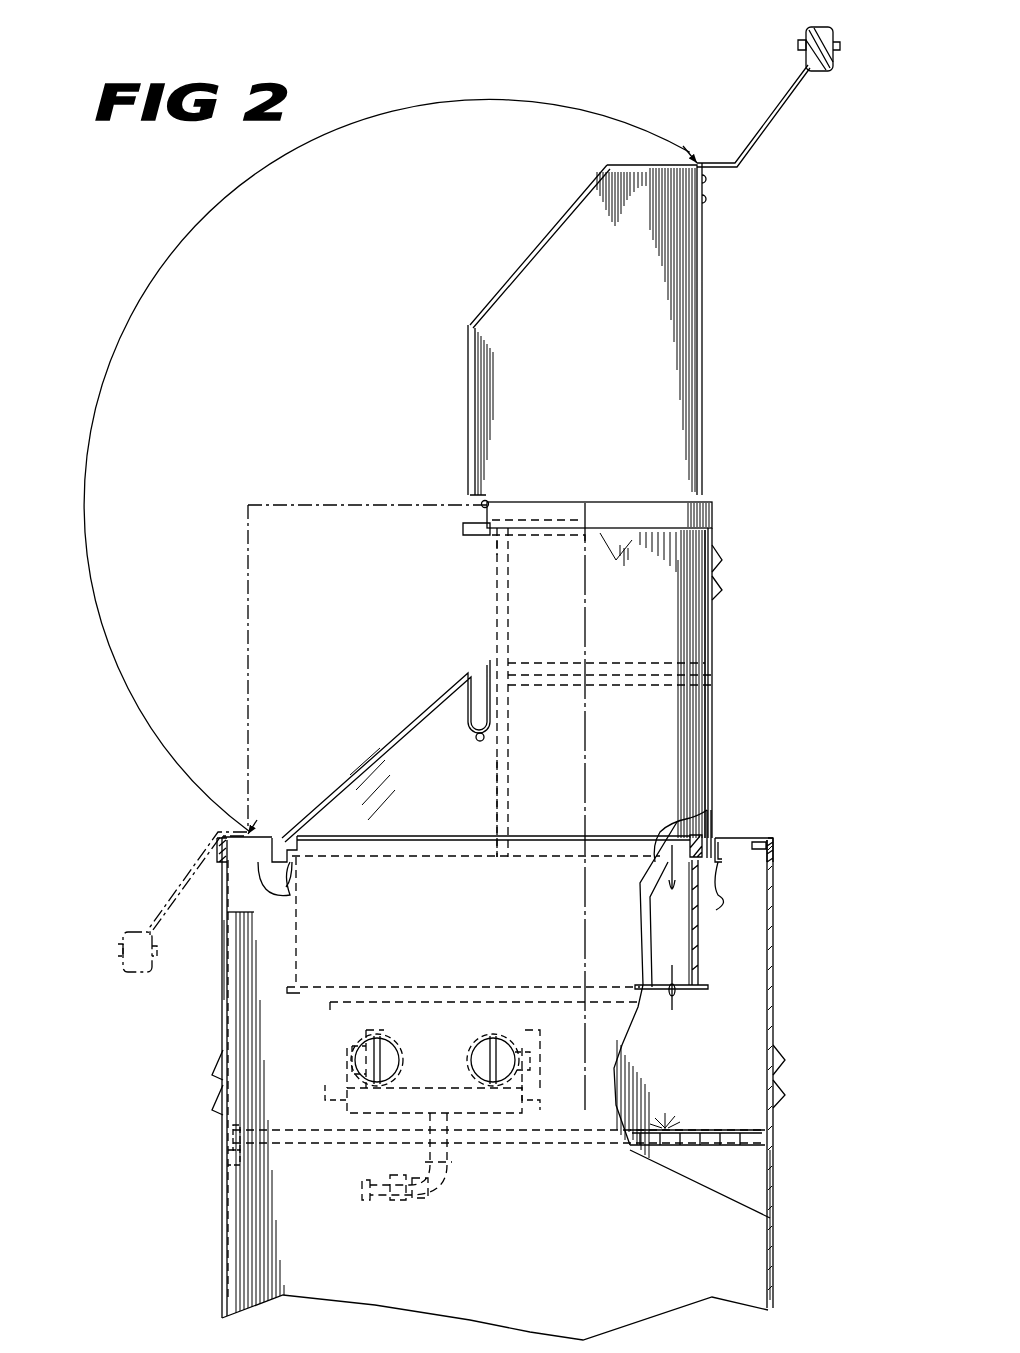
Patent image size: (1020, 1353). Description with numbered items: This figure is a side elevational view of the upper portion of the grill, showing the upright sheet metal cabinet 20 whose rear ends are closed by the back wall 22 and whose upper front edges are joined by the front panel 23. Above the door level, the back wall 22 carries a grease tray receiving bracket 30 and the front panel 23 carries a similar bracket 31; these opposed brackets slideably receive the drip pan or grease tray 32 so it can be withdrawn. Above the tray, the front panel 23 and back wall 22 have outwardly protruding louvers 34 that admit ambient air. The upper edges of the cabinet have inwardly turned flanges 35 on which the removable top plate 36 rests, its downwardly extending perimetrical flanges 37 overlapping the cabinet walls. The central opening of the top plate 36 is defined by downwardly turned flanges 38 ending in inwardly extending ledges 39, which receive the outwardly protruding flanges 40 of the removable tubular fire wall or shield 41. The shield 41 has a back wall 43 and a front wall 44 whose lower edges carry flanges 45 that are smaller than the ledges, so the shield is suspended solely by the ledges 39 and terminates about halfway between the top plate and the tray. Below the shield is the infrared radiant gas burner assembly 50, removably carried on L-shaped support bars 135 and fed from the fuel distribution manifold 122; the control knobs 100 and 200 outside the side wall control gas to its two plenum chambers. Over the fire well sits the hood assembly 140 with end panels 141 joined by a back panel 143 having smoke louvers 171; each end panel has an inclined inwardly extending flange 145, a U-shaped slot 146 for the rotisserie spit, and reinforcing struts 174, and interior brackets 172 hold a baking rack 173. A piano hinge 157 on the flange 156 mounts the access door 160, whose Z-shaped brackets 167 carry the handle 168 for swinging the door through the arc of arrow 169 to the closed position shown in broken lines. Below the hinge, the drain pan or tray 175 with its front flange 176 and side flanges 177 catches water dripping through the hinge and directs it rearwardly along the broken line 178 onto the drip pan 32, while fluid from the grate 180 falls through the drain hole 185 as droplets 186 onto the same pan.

The cabinet 20 is at (221, 1220).
The back wall 22 is at (774, 1192).
The front panel 23 is at (222, 964).
The grease tray receiving bracket 30 is at (762, 1165).
The bracket 31 is at (224, 1166).
The drip pan or grease tray 32 is at (672, 1146).
The louvers 34 is at (215, 1065).
The inwardly turned flanges 35 is at (222, 870).
The top plate 36 is at (758, 838).
The perimetrical flanges 37 is at (774, 858).
The downwardly turned flanges 38 is at (280, 885).
The ledges 39 is at (690, 870).
The outwardly protruding flanges 40 is at (290, 850).
The fire wall or shield 41 is at (700, 968).
The back wall 43 is at (699, 940).
The front wall 44 is at (294, 945).
The flanges 45 is at (292, 1000).
The infrared radiant gas burner assembly 50 is at (455, 1026).
The control knob 100 is at (355, 1058).
The fuel distribution manifold 122 is at (386, 1130).
The burner assembly support bars 135 is at (323, 1102).
The hood assembly 140 is at (713, 632).
The end panels 141 is at (694, 752).
The back panel 143 is at (713, 708).
The inwardly extending flange 145 is at (392, 752).
The U-shaped slots 146 is at (478, 742).
The flange 156 is at (652, 512).
The piano hinge 157 is at (480, 504).
The access door 160 is at (704, 346).
The handle carrying brackets 167 is at (775, 104).
The handle 168 is at (830, 38).
The arrow 169 is at (170, 262).
The louvers 171 is at (720, 590).
The brackets 172 is at (600, 686).
The baking rack 173 is at (598, 662).
The reinforcing struts 174 is at (496, 780).
The drain pan or tray 175 is at (482, 542).
The front flange 176 is at (468, 530).
The side flanges 177 is at (522, 518).
The broken line 178 is at (588, 775).
The grate 180 is at (713, 832).
The drain hole 185 is at (676, 830).
The droplets 186 is at (676, 1002).
The control knob 200 is at (530, 1062).